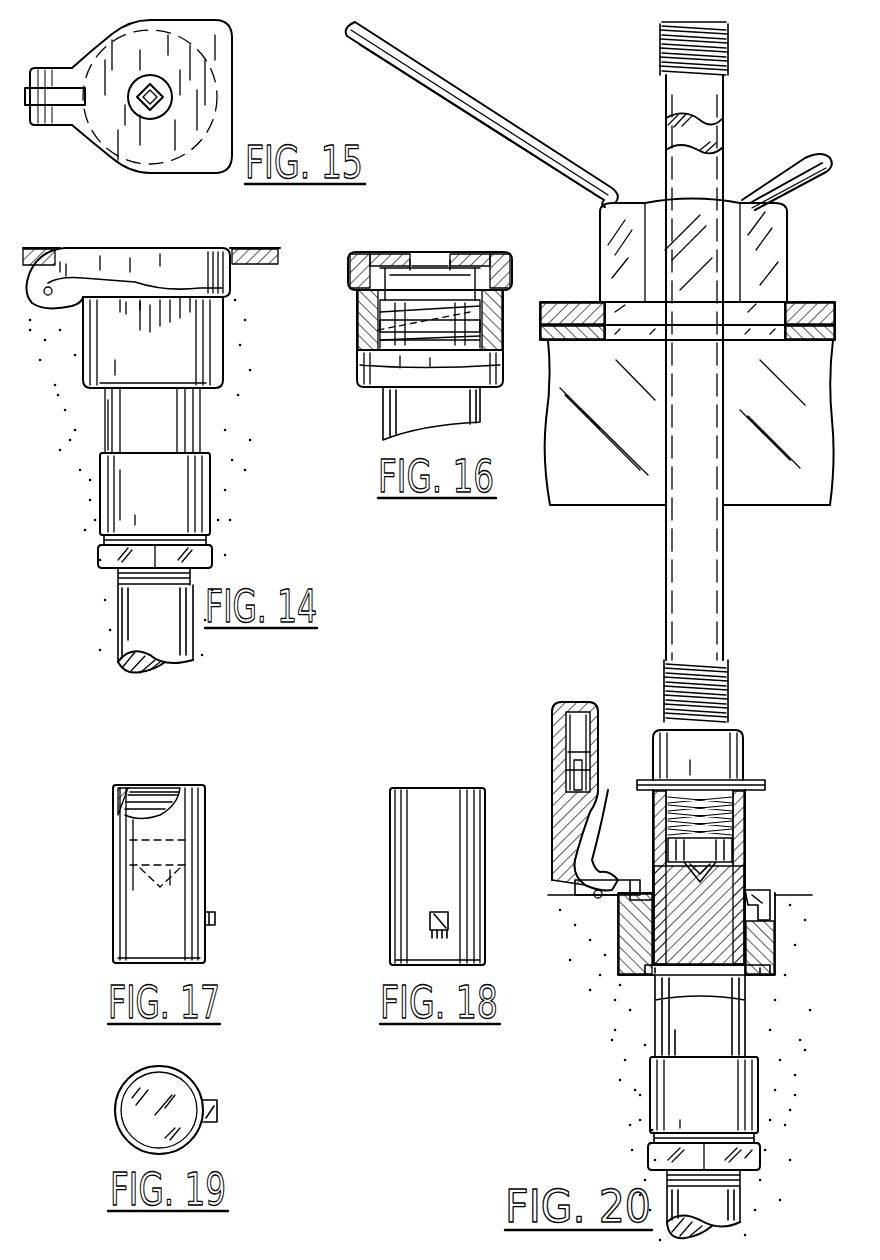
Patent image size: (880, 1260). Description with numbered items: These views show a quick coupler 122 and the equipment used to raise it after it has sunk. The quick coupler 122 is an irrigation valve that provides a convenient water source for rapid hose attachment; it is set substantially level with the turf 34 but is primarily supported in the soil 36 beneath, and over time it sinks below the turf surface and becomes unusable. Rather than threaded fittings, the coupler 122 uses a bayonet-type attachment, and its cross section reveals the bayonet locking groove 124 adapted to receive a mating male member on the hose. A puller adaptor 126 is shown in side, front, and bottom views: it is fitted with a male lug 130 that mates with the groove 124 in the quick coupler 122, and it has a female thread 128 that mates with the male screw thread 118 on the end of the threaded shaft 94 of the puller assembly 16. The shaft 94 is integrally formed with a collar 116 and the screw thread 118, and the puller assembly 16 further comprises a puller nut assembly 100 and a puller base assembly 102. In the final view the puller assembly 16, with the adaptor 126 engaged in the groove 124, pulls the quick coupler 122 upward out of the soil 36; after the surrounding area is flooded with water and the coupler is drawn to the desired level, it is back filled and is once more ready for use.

In FIG. 14, the puller assembly 16 is at (170, 216).
In FIG. 20, the puller assembly 16 is at (620, 535).
In FIG. 14, the turf 34 is at (238, 263).
In FIG. 14, the soil 36 is at (256, 442).
In FIG. 20, the soil 36 is at (612, 1012).
In FIG. 20, the threaded shaft 94 is at (715, 478).
In FIG. 20, the puller nut assembly 100 is at (540, 128).
In FIG. 20, the puller base assembly 102 is at (787, 408).
In FIG. 20, the collar 116 is at (730, 755).
In FIG. 20, the screw thread 118 is at (740, 825).
In FIG. 14, the quick coupler 122 is at (214, 338).
In FIG. 20, the quick coupler 122 is at (746, 892).
In FIG. 16, the bayonet locking groove 124 is at (380, 326).
In FIG. 20, the bayonet locking groove 124 is at (650, 905).
In FIG. 17, the puller adaptor 126 is at (232, 832).
In FIG. 18, the puller adaptor 126 is at (415, 943).
In FIG. 19, the puller adaptor 126 is at (176, 1082).
In FIG. 20, the puller adaptor 126 is at (600, 800).
In FIG. 17, the female thread 128 is at (148, 786).
In FIG. 17, the male lug 130 is at (214, 915).
In FIG. 18, the male lug 130 is at (430, 915).
In FIG. 19, the male lug 130 is at (218, 1108).
In FIG. 20, the male lug 130 is at (757, 918).